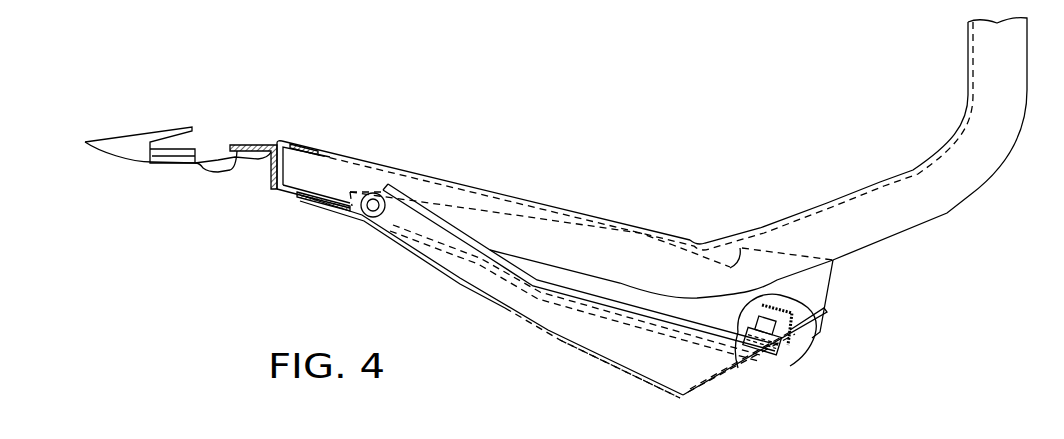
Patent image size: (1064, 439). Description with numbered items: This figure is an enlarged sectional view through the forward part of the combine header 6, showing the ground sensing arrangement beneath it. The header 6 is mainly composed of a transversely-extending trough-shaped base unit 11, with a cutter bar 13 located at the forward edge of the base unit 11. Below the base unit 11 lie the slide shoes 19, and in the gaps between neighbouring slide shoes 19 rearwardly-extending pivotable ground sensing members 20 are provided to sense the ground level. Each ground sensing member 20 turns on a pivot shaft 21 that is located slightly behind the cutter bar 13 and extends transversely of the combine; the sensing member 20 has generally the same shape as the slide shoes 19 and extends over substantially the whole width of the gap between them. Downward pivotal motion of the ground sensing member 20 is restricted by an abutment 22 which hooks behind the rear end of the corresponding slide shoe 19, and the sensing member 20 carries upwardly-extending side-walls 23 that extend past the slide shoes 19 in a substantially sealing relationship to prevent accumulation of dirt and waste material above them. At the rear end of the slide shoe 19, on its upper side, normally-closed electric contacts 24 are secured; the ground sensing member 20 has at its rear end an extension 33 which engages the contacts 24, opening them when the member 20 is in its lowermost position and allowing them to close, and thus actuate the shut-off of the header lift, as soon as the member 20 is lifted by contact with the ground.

The header 6 is at (950, 216).
The base unit 11 is at (473, 188).
The cutter bar 13 is at (202, 165).
The slide shoes 19 is at (457, 257).
The ground sensing members 20 is at (553, 326).
The pivot shaft 21 is at (363, 217).
The abutments 22 is at (792, 338).
The side-walls 23 is at (690, 372).
The electric contacts 24 is at (780, 362).
The extensions 33 is at (805, 293).